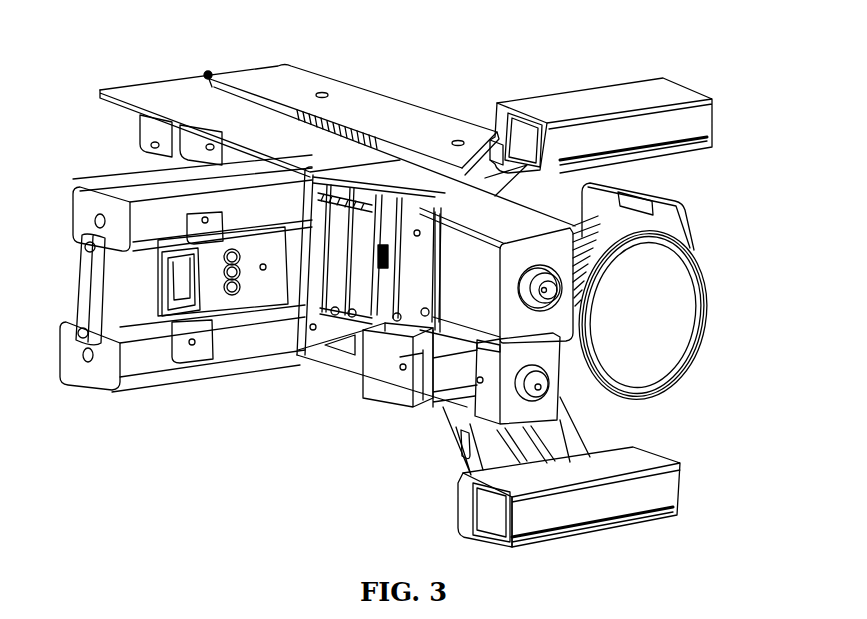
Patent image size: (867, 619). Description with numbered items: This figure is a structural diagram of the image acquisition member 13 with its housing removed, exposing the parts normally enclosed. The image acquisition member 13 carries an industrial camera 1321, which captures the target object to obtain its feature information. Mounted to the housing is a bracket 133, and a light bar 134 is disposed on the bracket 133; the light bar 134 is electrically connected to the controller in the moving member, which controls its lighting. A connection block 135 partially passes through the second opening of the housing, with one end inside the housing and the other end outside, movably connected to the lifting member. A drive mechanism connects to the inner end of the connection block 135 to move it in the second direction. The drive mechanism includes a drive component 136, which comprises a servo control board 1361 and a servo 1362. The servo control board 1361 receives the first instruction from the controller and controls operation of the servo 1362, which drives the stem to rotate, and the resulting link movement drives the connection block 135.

The image acquisition member 13 is at (403, 275).
The bracket 133 is at (623, 98).
The light bar 134 is at (693, 123).
The connection block 135 is at (128, 185).
The drive component 136 is at (370, 397).
The servo control board 1361 is at (370, 355).
The servo 1362 is at (367, 421).
The industrial camera 1321 is at (670, 335).